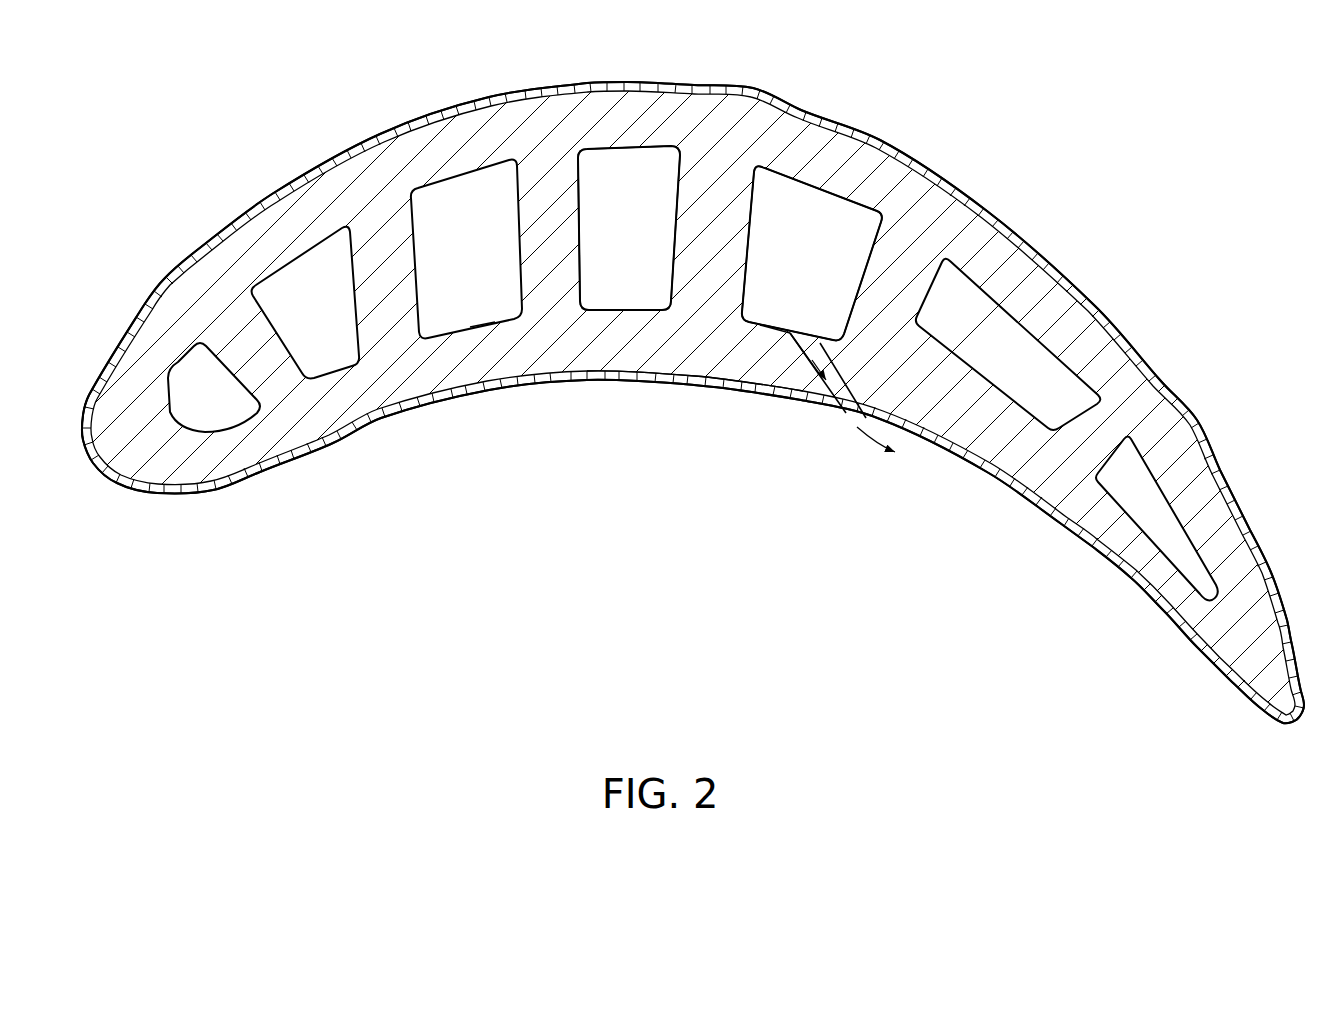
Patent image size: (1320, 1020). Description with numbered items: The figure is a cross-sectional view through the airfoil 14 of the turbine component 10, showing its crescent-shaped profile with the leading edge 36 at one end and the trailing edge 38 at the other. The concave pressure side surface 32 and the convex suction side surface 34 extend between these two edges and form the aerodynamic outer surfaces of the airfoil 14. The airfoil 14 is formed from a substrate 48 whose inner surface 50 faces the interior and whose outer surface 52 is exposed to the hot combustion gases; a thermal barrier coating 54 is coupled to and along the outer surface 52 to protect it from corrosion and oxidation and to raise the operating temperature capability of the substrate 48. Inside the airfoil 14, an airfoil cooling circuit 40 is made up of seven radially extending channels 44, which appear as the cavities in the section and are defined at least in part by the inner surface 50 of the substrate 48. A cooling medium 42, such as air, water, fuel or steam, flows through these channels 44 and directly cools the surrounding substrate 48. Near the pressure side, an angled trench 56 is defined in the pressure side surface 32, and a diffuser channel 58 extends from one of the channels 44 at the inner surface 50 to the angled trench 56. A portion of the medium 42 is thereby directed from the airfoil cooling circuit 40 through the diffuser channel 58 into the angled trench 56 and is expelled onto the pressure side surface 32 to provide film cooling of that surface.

The turbine component 10 is at (199, 169).
The airfoil 14 is at (747, 83).
The pressure side surface 32 is at (487, 392).
The suction side surface 34 is at (627, 82).
The leading edge 36 is at (100, 482).
The trailing edge 38 is at (1291, 723).
The airfoil cooling circuit 40 is at (473, 157).
The medium 42 is at (792, 209).
The channels 44 is at (1164, 522).
The substrate 48 is at (920, 224).
The inner surface 50 is at (770, 326).
The outer surface 52 is at (648, 380).
The thermal barrier coating 54 is at (708, 388).
The angled trench 56 is at (848, 430).
The diffuser channels 58 is at (797, 372).